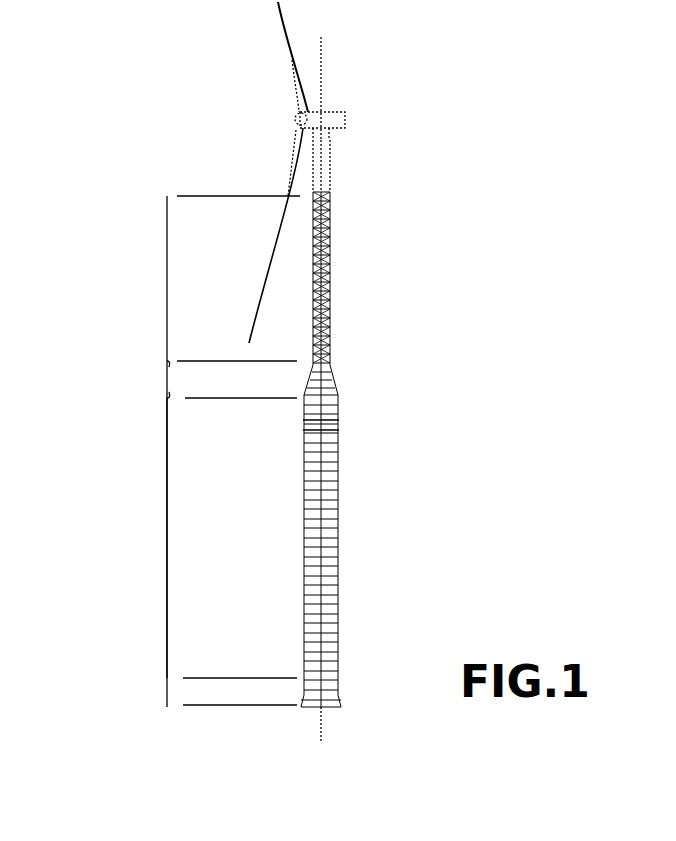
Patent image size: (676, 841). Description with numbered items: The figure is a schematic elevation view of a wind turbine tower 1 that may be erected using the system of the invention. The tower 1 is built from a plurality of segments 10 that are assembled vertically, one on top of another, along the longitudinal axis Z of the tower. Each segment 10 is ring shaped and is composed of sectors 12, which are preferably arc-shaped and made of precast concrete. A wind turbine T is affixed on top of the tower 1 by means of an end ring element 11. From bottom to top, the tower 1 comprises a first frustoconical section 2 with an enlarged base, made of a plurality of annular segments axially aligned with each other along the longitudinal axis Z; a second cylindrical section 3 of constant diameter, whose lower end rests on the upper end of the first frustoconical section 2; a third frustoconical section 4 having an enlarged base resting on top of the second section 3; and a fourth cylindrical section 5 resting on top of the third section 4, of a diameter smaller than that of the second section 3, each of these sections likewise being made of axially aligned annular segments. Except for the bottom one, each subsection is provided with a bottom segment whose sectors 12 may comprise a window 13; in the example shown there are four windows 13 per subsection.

The wind turbine tower 1 is at (365, 277).
The first frustoconical section 2 is at (167, 692).
The second cylindrical section 3 is at (167, 545).
The third frustoconical section 4 is at (167, 378).
The fourth cylindrical section 5 is at (167, 277).
The segment 10 is at (330, 387).
The end ring element 11 is at (321, 191).
The sector 12 is at (328, 330).
The window 13 is at (330, 430).
The wind turbine T is at (337, 120).
The longitudinal axis Z is at (321, 91).